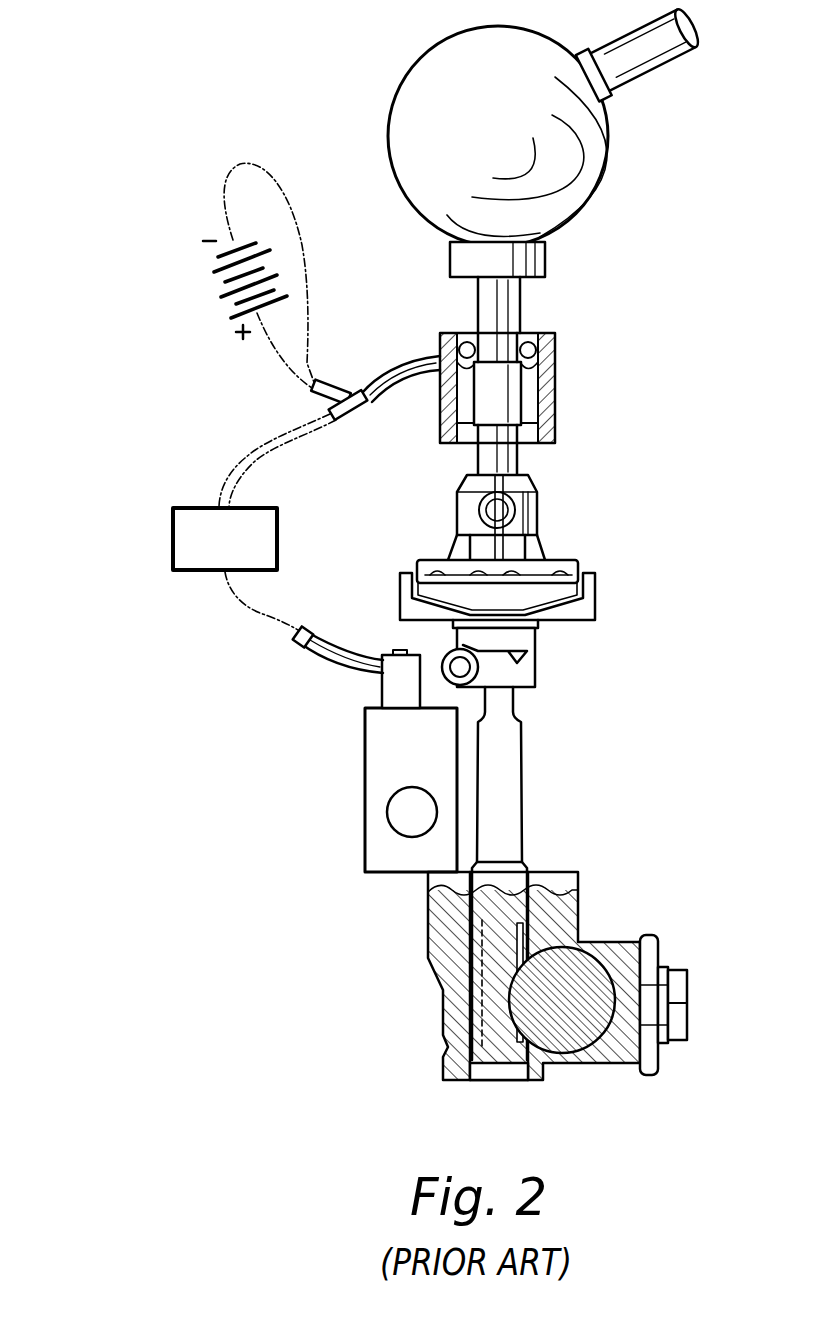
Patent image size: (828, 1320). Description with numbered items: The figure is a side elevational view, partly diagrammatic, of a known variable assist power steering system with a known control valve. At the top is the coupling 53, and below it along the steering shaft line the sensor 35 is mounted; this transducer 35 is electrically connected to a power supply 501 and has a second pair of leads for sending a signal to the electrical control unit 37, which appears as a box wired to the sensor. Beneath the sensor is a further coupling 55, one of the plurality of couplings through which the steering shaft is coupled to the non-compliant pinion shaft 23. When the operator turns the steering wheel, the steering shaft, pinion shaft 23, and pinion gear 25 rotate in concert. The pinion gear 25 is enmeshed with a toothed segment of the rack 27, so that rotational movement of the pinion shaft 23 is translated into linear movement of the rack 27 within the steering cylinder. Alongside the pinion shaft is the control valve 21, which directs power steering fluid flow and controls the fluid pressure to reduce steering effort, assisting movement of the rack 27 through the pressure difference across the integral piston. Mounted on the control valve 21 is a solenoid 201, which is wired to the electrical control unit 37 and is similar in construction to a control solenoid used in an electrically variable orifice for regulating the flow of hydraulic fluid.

The coupling 53 is at (573, 158).
The sensor 35 is at (555, 382).
The coupling 55 is at (560, 597).
The non-compliant pinion shaft 23 is at (518, 780).
The control valve 21 is at (368, 806).
The solenoid 201 is at (395, 690).
The pinion gear 25 is at (512, 970).
The rack 27 is at (620, 948).
The power supply 501 is at (198, 289).
The electrical control unit 37 is at (173, 540).